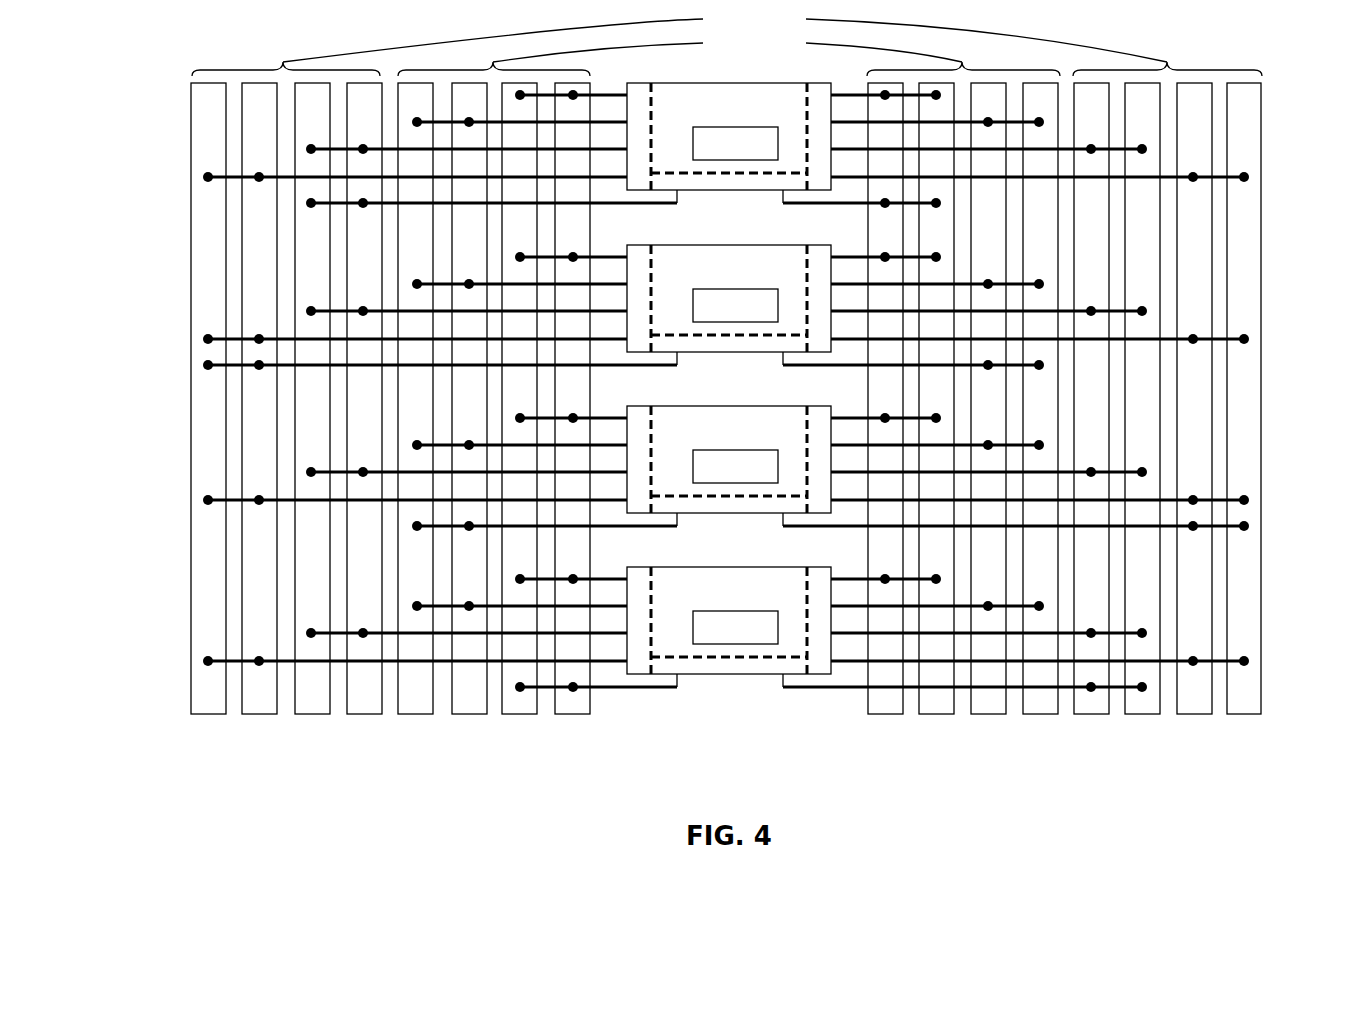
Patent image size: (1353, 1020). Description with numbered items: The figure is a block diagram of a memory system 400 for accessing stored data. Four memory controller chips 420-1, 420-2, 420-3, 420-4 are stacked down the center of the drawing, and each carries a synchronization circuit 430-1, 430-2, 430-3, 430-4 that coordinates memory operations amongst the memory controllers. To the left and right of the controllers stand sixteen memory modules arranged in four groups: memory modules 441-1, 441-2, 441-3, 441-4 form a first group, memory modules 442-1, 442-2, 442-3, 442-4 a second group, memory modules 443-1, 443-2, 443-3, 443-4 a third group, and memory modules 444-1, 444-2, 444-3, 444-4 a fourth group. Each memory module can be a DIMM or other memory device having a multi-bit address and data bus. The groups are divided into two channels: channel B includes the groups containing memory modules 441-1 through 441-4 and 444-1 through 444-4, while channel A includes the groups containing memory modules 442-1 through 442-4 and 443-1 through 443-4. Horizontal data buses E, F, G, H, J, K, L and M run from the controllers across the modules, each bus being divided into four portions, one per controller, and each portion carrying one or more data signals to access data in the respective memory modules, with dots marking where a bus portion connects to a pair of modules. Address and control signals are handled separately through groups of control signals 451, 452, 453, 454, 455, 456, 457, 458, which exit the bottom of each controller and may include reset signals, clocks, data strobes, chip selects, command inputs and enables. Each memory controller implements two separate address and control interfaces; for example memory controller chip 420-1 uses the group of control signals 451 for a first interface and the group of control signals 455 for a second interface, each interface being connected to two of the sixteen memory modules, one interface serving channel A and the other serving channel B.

The memory system 400 is at (122, 97).
The memory controller chip 420-1 is at (770, 114).
The memory controller chip 420-2 is at (770, 276).
The memory controller chip 420-3 is at (770, 437).
The memory controller chip 420-4 is at (770, 598).
The synchronization circuit 430-1 is at (735, 143).
The synchronization circuit 430-2 is at (735, 305).
The synchronization circuit 430-3 is at (735, 466).
The synchronization circuit 430-4 is at (735, 627).
The memory module 441-1 is at (205, 720).
The memory module 441-2 is at (262, 728).
The memory module 441-3 is at (315, 728).
The memory module 441-4 is at (367, 728).
The memory module 442-1 is at (422, 728).
The memory module 442-2 is at (475, 727).
The memory module 442-3 is at (527, 723).
The memory module 442-4 is at (580, 722).
The memory module 443-1 is at (882, 720).
The memory module 443-2 is at (935, 722).
The memory module 443-3 is at (993, 720).
The memory module 443-4 is at (1045, 718).
The memory module 444-1 is at (1103, 720).
The memory module 444-2 is at (1155, 720).
The memory module 444-3 is at (1205, 718).
The memory module 444-4 is at (1253, 718).
The group of control signals 451 is at (660, 205).
The group of control signals 452 is at (658, 367).
The group of control signals 453 is at (660, 528).
The group of control signals 454 is at (650, 690).
The group of control signals 455 is at (822, 205).
The group of control signals 456 is at (792, 367).
The group of control signals 457 is at (792, 528).
The group of control signals 458 is at (793, 689).